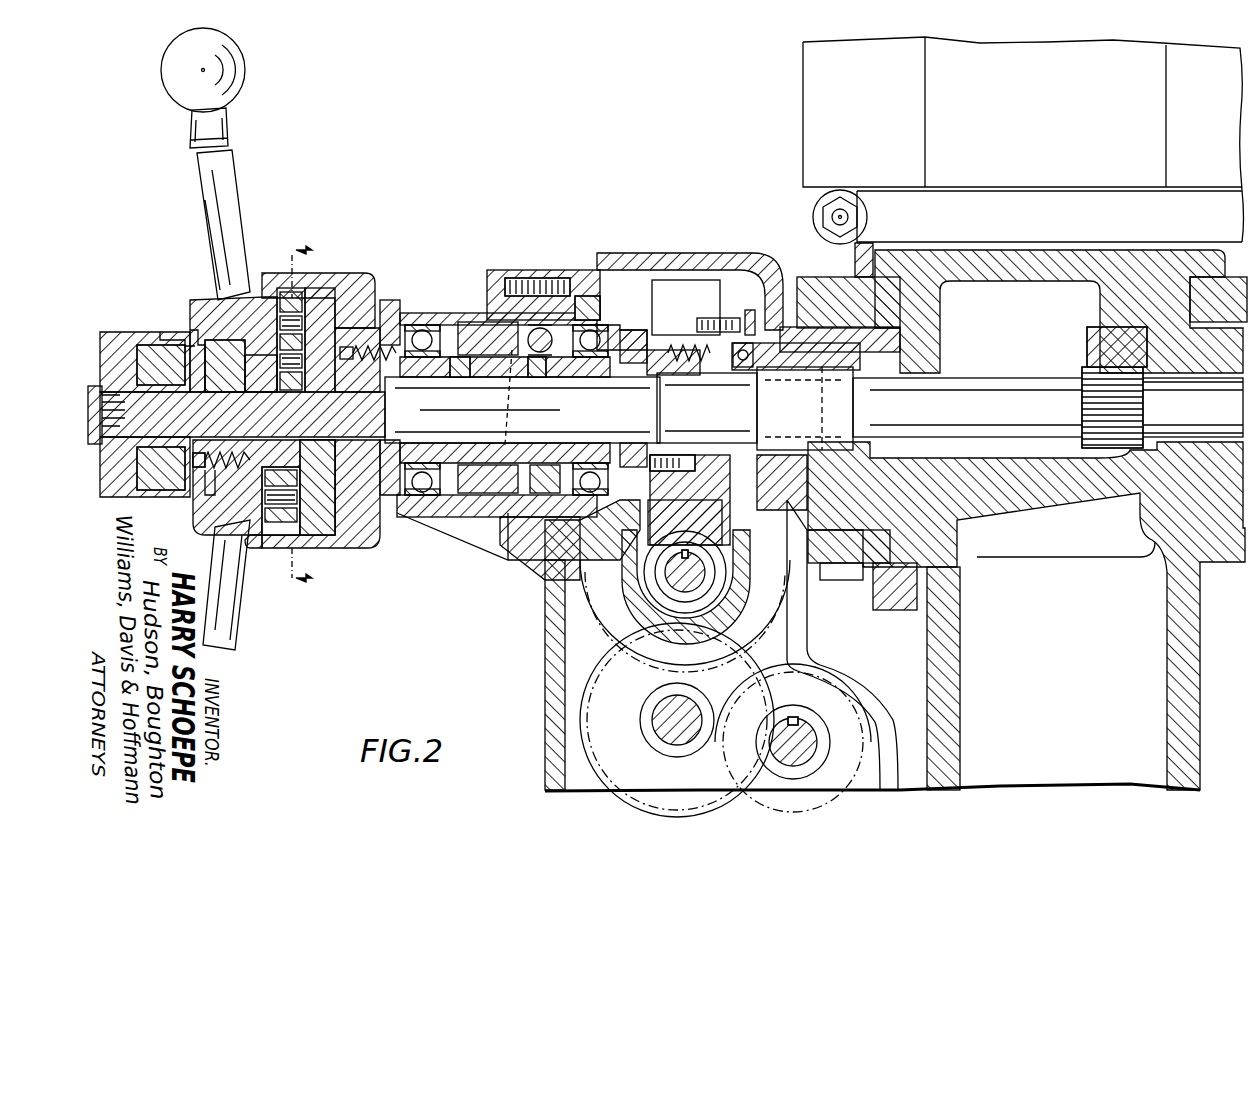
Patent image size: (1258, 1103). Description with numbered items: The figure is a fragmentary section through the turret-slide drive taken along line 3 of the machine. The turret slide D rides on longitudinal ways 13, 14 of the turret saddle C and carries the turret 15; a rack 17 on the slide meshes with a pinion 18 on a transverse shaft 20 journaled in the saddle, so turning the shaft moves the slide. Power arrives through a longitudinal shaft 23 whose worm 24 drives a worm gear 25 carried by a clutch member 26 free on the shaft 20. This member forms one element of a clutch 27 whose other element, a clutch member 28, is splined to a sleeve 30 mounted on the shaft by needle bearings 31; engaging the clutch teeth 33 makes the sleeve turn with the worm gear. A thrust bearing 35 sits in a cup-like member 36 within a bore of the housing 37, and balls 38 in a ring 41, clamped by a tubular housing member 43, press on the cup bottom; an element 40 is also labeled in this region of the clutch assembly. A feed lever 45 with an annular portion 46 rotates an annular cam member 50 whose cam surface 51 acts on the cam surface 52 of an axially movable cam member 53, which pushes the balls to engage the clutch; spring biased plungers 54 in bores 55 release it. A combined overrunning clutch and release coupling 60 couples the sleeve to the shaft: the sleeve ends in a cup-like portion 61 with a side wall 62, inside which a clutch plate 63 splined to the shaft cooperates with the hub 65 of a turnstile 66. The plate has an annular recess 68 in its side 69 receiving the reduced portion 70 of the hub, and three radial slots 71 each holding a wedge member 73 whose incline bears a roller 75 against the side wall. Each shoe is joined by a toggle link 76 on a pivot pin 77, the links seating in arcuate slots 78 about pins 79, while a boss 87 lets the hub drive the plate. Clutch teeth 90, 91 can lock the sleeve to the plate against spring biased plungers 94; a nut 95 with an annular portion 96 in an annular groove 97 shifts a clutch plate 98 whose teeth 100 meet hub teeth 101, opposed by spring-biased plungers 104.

The section line 3 is at (296, 412).
The longitudinal way 13 is at (860, 265).
The longitudinal way 14 is at (1230, 280).
The turret 15 is at (822, 68).
The rack 17 is at (1092, 338).
The pinion 18 is at (1095, 380).
The shaft 20 is at (990, 368).
The shaft 23 is at (705, 572).
The worm 24 is at (655, 572).
The worm gear 25 is at (720, 318).
The clutch member 26 is at (748, 310).
The clutch 27 is at (655, 348).
The clutch member 28 is at (642, 340).
The sleeve 30 is at (590, 360).
The needle bearings 31 is at (400, 370).
The clutch teeth 33 is at (666, 345).
The thrust bearing 35 is at (626, 328).
The cup-like member 36 is at (575, 318).
The housing 37 is at (620, 268).
The balls 38 is at (545, 300).
The bolt 40 is at (535, 328).
The ring 41 is at (478, 330).
The tubular housing member 43 is at (480, 543).
The feed lever 45 is at (480, 330).
The annular portion 46 is at (450, 515).
The annular cam member 50 is at (460, 377).
The cam surface 51 is at (505, 395).
The cam surface 52 is at (535, 377).
The annular cam member 53 is at (572, 372).
The spring biased plungers 54 is at (670, 352).
The bores 55 is at (745, 347).
The overrunning clutch and release coupling 60 is at (264, 272).
The cup-like portion 61 is at (340, 273).
The side wall 62 is at (325, 548).
The clutch plate 63 is at (378, 283).
The hub 65 is at (233, 344).
The turnstile 66 is at (213, 198).
The annular recess 68 is at (298, 468).
The side 69 is at (258, 550).
The reduced portion 70 is at (258, 373).
The radial slots 71 is at (300, 300).
The wedge member 73 is at (306, 317).
The roller 75 is at (282, 305).
The toggle link 76 is at (306, 356).
The pivot pin 77 is at (306, 337).
The arcuate slots 78 is at (308, 376).
The pins 79 is at (236, 361).
The boss 87 is at (270, 510).
The clutch teeth 90 is at (380, 345).
The clutch teeth 91 is at (370, 353).
The spring biased plungers 94 is at (242, 413).
The nut 95 is at (102, 385).
The annular portion 96 is at (160, 345).
The annular groove 97 is at (208, 497).
The clutch plate 98 is at (145, 414).
The clutch teeth 100 is at (172, 332).
The clutch teeth 101 is at (196, 330).
The spring-biased plungers 104 is at (205, 470).
The turret saddle C is at (1030, 468).
The turret slide D is at (1030, 280).